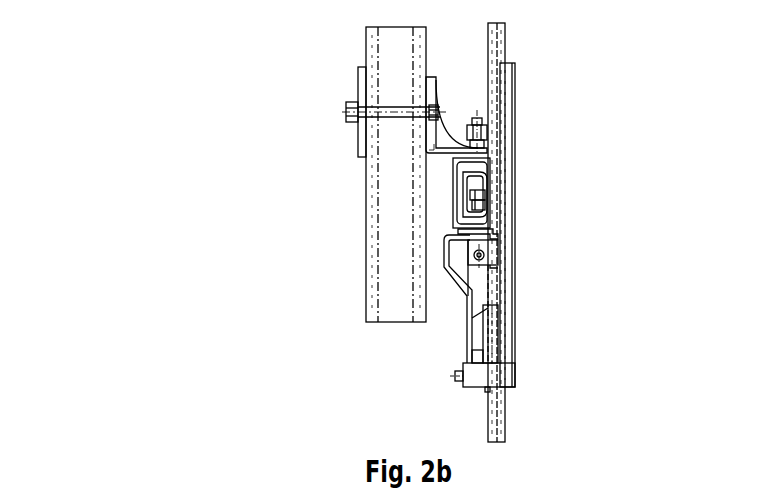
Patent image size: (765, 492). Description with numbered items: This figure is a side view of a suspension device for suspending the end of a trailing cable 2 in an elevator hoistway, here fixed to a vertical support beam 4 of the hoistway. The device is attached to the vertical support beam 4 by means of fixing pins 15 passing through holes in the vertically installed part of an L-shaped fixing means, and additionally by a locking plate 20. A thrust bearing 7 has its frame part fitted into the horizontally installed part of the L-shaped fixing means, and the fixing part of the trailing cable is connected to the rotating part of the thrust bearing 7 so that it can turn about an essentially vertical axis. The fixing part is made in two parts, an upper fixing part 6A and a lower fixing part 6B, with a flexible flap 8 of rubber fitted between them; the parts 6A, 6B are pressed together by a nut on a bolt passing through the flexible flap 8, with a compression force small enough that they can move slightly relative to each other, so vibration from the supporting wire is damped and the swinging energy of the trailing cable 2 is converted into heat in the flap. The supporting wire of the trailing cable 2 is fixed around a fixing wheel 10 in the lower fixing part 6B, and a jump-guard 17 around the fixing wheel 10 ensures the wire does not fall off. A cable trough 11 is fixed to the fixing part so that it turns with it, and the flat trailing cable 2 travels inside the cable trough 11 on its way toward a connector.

The trailing cable 2 is at (507, 40).
The vertical support beam 4 is at (372, 210).
The upper fixing part of the trailing cable 6A is at (478, 183).
The lower fixing part of the trailing cable 6B is at (473, 296).
The thrust bearing 7 is at (483, 139).
The flexible flap 8 is at (495, 230).
The fixing wheel 10 is at (487, 364).
The cable trough 11 is at (513, 170).
The fixing pins 15 is at (400, 105).
The jump-guard 17 is at (485, 337).
The locking plate 20 is at (363, 130).